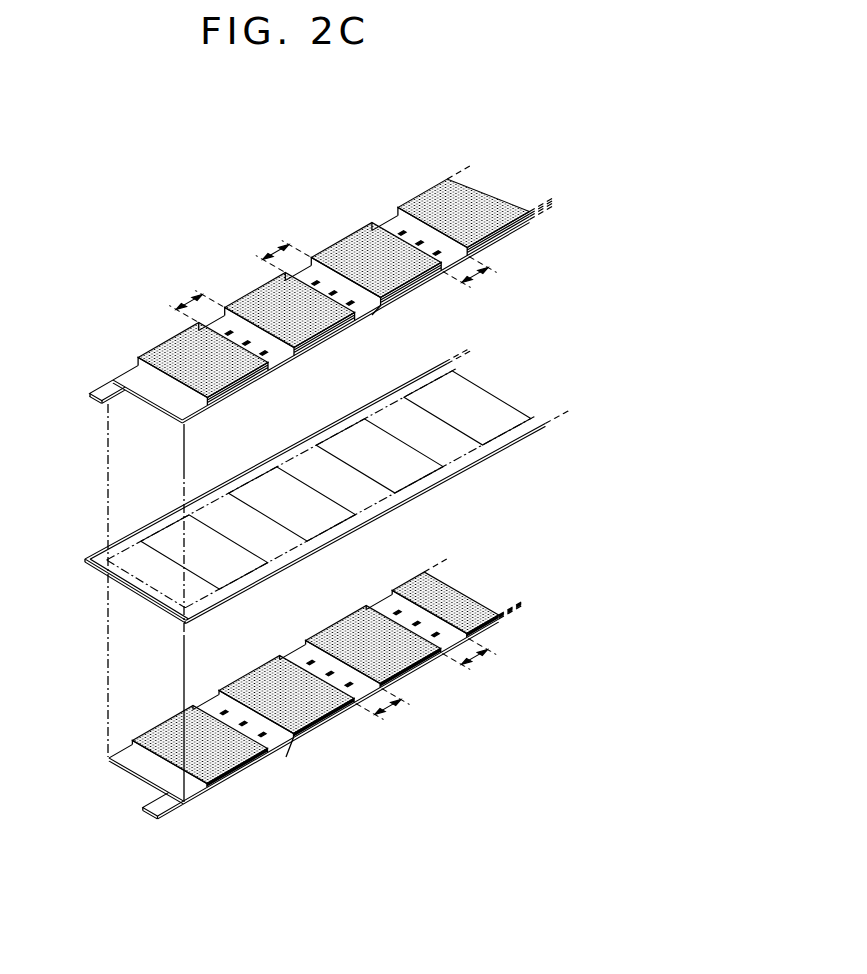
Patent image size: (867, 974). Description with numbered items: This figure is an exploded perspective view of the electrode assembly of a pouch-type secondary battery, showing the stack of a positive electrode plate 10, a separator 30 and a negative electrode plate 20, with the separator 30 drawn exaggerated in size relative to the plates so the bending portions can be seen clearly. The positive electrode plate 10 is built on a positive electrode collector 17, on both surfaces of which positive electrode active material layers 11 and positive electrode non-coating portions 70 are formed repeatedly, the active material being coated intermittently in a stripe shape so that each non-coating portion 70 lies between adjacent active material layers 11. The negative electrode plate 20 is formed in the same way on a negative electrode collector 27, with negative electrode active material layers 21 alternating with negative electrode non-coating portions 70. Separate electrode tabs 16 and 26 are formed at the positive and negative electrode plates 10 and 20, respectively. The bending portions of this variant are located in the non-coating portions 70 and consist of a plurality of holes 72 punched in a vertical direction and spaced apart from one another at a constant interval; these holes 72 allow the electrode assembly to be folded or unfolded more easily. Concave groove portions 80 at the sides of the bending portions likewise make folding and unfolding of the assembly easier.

The positive electrode plate 10 is at (136, 300).
The positive electrode active material layer 11 is at (418, 192).
The electrode tab 16 is at (93, 398).
The positive electrode collector 17 is at (114, 378).
The negative electrode plate 20 is at (400, 750).
The negative electrode active material layer 21 is at (412, 596).
The electrode tab 26 is at (143, 808).
The negative electrode collector 27 is at (136, 760).
The separator 30 is at (98, 602).
The non-coating portion 70 is at (276, 247).
The holes 72 is at (333, 290).
The concave groove portion 80 is at (366, 312).